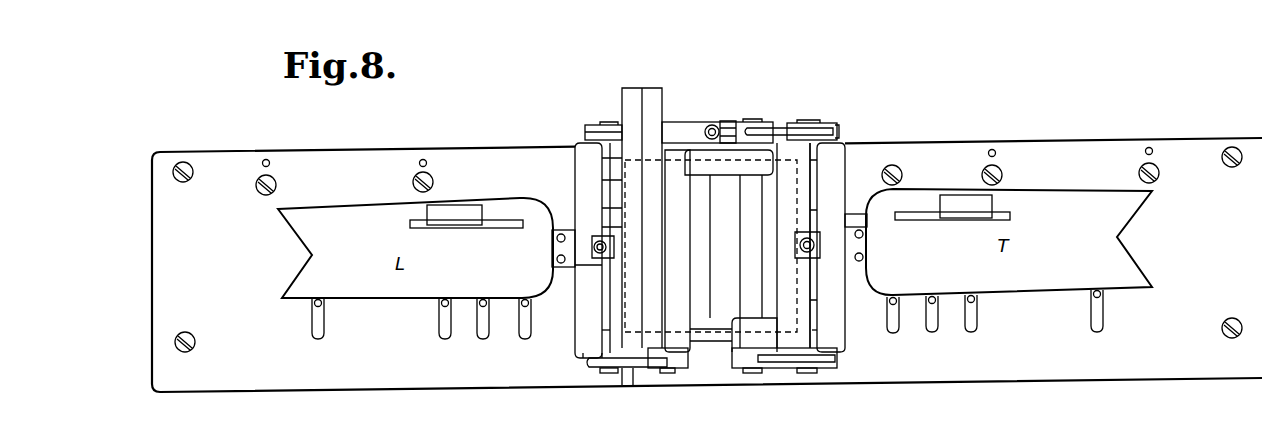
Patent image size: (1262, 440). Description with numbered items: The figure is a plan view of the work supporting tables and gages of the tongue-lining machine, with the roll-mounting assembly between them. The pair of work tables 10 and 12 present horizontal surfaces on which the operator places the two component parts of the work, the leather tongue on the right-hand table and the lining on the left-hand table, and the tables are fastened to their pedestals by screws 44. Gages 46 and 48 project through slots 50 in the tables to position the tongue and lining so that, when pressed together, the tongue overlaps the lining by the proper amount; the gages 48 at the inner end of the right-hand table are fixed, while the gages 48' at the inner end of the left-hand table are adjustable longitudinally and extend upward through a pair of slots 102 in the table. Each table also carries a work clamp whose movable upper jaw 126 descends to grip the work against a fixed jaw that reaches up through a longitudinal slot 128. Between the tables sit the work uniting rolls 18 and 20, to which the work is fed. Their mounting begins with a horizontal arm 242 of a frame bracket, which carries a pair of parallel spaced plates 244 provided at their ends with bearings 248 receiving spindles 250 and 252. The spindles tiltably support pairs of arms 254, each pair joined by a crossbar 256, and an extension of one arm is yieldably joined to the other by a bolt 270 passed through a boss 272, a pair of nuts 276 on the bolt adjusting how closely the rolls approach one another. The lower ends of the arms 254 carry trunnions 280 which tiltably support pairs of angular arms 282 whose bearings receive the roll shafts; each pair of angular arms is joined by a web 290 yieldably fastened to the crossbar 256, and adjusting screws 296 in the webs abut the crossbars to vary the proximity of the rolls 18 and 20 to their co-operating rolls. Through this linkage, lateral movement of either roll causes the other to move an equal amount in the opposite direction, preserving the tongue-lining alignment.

The work table 10 is at (1122, 353).
The work table 12 is at (707, 265).
The work uniting roll 18 is at (727, 236).
The work uniting roll 20 is at (693, 240).
The screws 44 is at (183, 184).
The gages 46 is at (311, 304).
The gages 48 is at (885, 245).
The gages 48' is at (534, 248).
The slots 50 is at (326, 320).
The slots 102 is at (572, 238).
The movable jaw 126 is at (466, 228).
The slot 128 is at (853, 212).
The horizontal arm 242 is at (667, 256).
The parallel spaced plates 244 is at (695, 122).
The bearings 248 is at (752, 318).
The spindle 250 is at (668, 374).
The spindle 252 is at (756, 121).
The arms 254 is at (790, 127).
The crossbar 256 is at (575, 185).
The bolt 270 is at (712, 124).
The boss 272 is at (748, 119).
The nuts 276 is at (728, 121).
The trunnions 280 is at (607, 122).
The angular arms 282 is at (605, 330).
The web 290 is at (575, 168).
The adjusting screws 296 is at (568, 264).